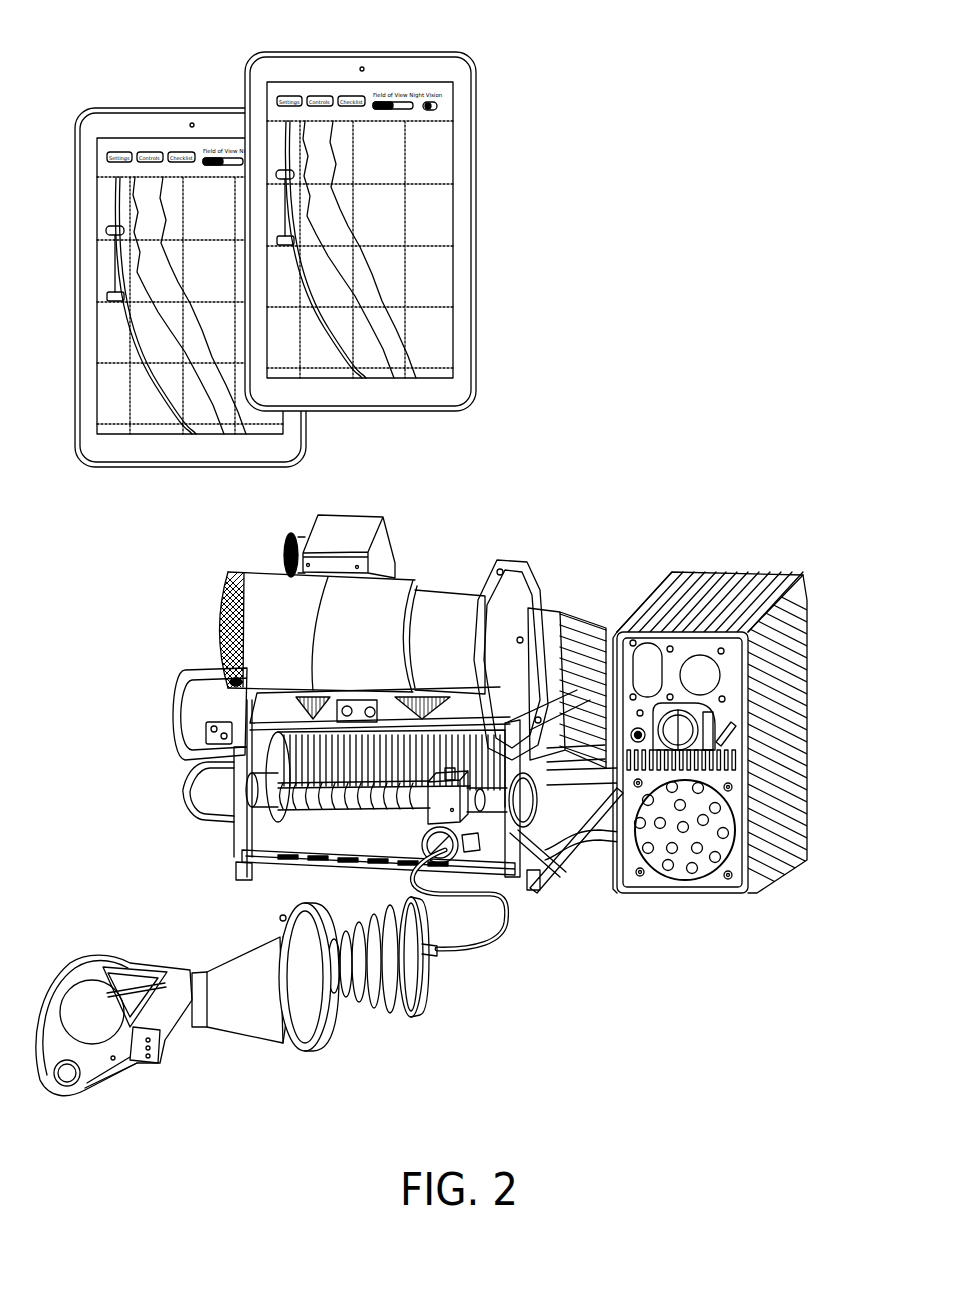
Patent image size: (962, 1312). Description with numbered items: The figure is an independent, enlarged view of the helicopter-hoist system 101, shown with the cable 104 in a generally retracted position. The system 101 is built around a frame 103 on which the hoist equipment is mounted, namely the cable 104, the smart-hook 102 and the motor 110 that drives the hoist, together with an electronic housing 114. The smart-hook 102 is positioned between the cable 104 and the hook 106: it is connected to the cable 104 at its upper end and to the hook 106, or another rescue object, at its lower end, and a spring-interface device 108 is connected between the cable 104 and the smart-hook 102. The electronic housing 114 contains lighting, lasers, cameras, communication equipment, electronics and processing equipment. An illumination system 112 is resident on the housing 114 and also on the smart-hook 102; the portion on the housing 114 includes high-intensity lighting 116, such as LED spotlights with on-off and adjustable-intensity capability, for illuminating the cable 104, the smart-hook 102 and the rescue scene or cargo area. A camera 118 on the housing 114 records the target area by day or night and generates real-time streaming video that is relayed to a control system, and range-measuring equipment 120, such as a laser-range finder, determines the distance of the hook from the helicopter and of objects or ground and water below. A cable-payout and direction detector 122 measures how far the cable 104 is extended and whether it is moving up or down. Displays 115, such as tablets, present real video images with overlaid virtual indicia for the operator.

The helicopter-hoist system 101 is at (536, 448).
The smart-hook 102 is at (333, 1020).
The frame 103 is at (562, 858).
The cable 104 is at (487, 953).
The hook 106 is at (153, 1057).
The spring-interface device 108 is at (423, 1020).
The motor 110 is at (215, 605).
The illumination system 112 is at (660, 852).
The electronic housing 114 is at (677, 571).
The display 115 is at (160, 108).
The high-intensity lighting 116 is at (715, 857).
The camera 118 is at (710, 678).
The range-measuring equipment 120 is at (645, 657).
The cable-payout and direction detector 122 is at (477, 837).